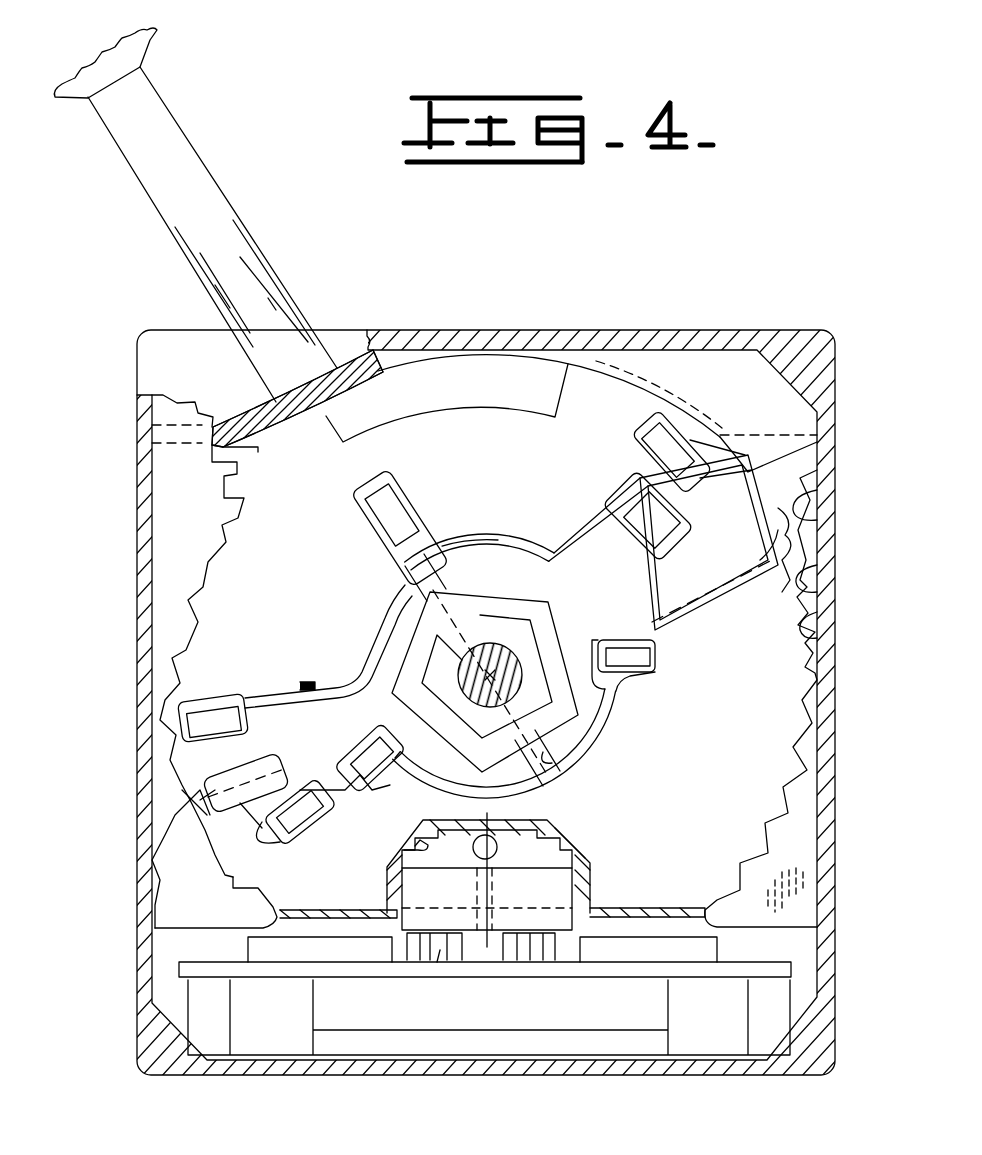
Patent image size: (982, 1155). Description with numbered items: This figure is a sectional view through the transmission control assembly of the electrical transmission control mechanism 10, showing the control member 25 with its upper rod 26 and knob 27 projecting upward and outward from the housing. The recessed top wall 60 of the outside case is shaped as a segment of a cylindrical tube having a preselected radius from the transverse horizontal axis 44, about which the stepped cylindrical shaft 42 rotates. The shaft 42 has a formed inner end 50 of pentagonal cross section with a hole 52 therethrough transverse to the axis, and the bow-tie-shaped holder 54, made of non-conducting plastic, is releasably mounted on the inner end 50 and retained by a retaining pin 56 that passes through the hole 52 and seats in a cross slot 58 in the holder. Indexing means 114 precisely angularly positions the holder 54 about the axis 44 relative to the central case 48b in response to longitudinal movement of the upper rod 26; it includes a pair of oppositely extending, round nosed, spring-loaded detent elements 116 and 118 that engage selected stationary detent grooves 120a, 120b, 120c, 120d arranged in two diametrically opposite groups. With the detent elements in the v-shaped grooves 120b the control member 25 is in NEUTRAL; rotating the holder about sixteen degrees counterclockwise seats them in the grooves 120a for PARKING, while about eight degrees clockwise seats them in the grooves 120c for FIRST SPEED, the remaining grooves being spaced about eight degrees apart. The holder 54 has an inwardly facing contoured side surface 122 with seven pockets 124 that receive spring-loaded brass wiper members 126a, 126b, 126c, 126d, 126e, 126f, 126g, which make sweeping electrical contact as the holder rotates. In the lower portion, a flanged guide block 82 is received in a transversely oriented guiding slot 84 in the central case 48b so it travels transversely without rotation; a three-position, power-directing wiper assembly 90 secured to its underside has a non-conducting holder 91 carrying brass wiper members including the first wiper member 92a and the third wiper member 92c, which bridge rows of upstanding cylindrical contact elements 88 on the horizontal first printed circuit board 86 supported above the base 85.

The electrical transmission control mechanism 10 is at (633, 266).
The control member 25 is at (193, 148).
The upper rod 26 is at (218, 207).
The knob 27 is at (155, 45).
The stepped cylindrical shaft 42 is at (403, 636).
The transverse horizontal axis 44 is at (490, 683).
The central case 48b is at (188, 812).
The formed inner end 50 is at (537, 592).
The hole 52 is at (472, 595).
The holder 54 is at (574, 510).
The retaining pin 56 is at (442, 543).
The cross slot 58 is at (565, 762).
The recessed top wall 60 is at (262, 418).
The flanged guide block 82 is at (545, 830).
The guiding slot 84 is at (418, 847).
The base block 85 is at (314, 1012).
The first printed circuit board 86 is at (180, 966).
The contact elements 88 is at (437, 958).
The wiper assembly 90 is at (403, 925).
The holder 91 is at (582, 912).
The first wiper member 92a is at (452, 962).
The third wiper member 92c is at (552, 915).
The indexing means 114 is at (777, 520).
The detent element 116 is at (796, 532).
The detent element 118 is at (205, 832).
The detent grooves 120a is at (815, 437).
The detent grooves 120b is at (790, 556).
The detent grooves 120c is at (815, 590).
The detent grooves 120d is at (815, 638).
The contoured side surface 122 is at (308, 688).
The pockets 124 is at (383, 540).
The wiper member 126a is at (247, 695).
The wiper member 126b is at (312, 835).
The wiper member 126c is at (415, 785).
The wiper member 126d is at (661, 657).
The wiper member 126e is at (648, 548).
The wiper member 126f is at (682, 430).
The wiper member 126g is at (385, 488).